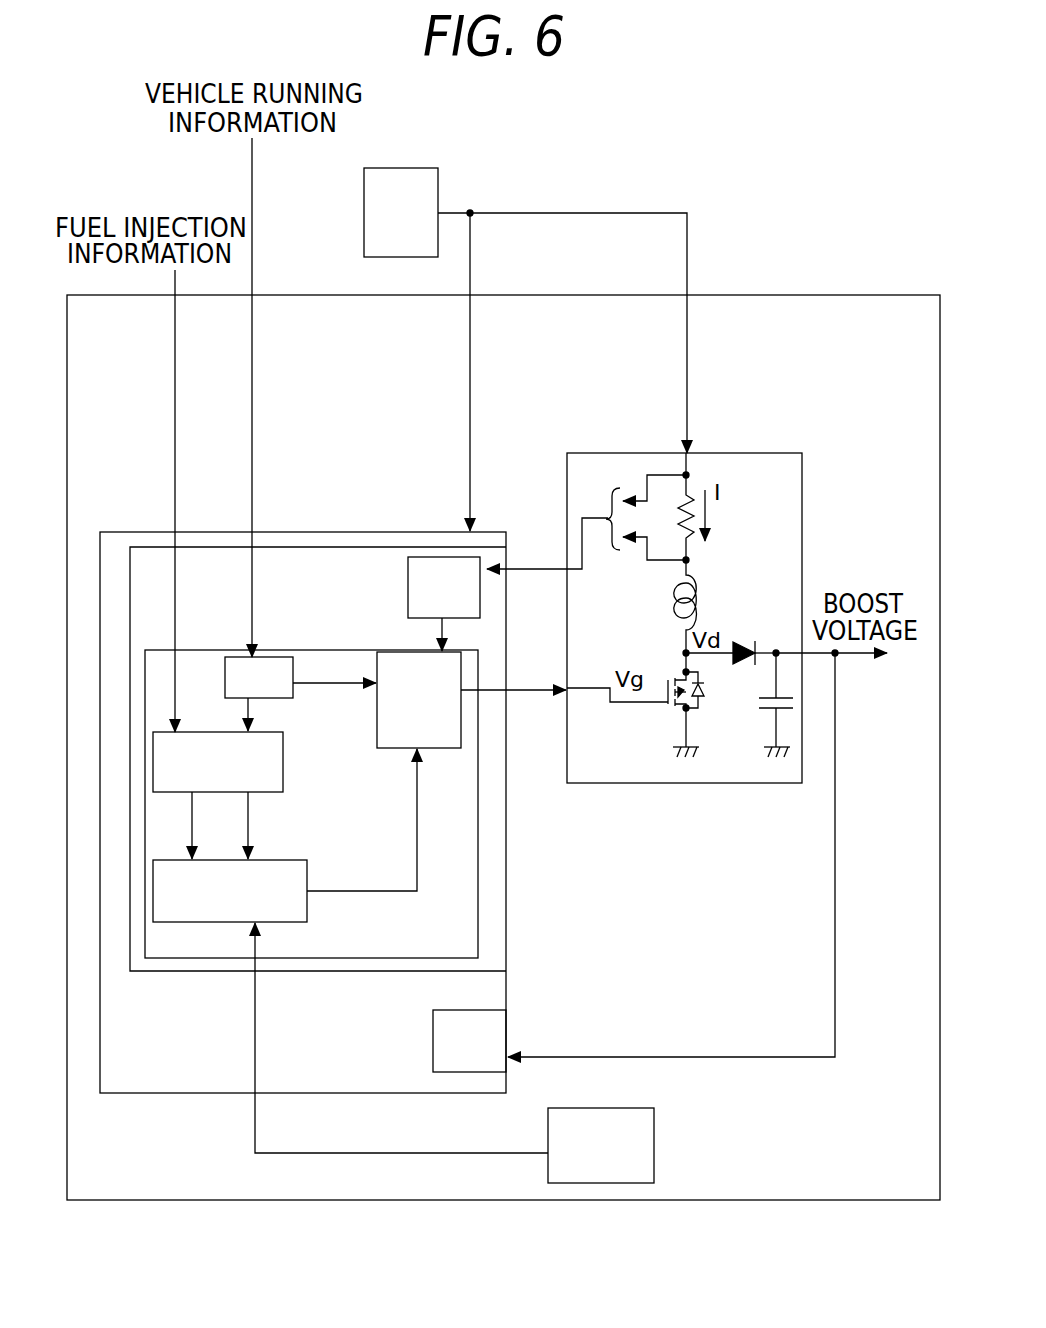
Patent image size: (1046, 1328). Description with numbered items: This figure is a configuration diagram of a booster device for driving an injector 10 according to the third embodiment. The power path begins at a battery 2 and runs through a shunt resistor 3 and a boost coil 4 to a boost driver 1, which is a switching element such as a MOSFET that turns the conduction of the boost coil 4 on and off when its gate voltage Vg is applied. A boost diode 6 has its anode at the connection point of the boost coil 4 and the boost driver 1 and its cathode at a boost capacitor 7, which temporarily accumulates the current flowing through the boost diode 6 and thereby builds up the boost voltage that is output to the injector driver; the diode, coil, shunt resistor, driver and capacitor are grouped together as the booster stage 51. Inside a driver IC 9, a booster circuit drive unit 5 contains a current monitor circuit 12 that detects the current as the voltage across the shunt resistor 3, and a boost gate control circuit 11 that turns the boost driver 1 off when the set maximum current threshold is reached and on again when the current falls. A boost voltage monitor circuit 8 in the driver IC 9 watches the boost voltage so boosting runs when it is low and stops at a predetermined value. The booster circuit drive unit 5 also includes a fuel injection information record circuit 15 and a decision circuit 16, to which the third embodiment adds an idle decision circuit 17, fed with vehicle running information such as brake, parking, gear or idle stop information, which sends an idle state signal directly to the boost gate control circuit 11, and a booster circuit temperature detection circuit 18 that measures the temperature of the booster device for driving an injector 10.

The boost driver 1 is at (660, 717).
The battery 2 is at (395, 177).
The shunt resistor 3 is at (703, 528).
The boost coil 4 is at (703, 597).
The booster circuit drive unit 5 is at (460, 928).
The boost diode 6 is at (745, 638).
The boost capacitor 7 is at (765, 713).
The boost voltage monitor circuit 8 is at (442, 1058).
The driver IC 9 is at (488, 997).
The booster device for driving an injector 10 is at (157, 1182).
The boost gate control circuit 11 is at (435, 730).
The current monitor circuit 12 is at (410, 557).
The fuel injection information record circuit 15 is at (258, 760).
The decision circuit 16 is at (212, 910).
The idle decision circuit 17 is at (260, 673).
The booster circuit temperature detection circuit 18 is at (633, 1147).
The boost circuit 51 is at (768, 478).